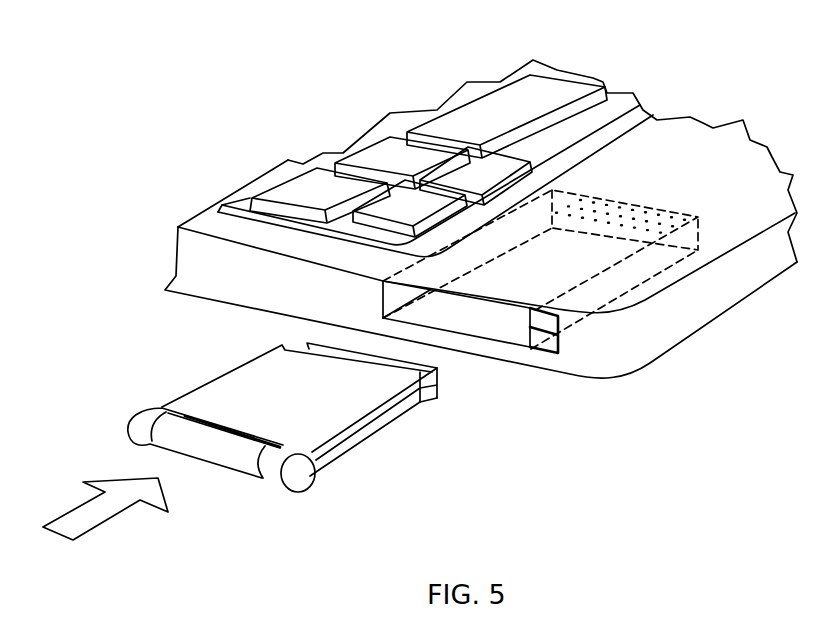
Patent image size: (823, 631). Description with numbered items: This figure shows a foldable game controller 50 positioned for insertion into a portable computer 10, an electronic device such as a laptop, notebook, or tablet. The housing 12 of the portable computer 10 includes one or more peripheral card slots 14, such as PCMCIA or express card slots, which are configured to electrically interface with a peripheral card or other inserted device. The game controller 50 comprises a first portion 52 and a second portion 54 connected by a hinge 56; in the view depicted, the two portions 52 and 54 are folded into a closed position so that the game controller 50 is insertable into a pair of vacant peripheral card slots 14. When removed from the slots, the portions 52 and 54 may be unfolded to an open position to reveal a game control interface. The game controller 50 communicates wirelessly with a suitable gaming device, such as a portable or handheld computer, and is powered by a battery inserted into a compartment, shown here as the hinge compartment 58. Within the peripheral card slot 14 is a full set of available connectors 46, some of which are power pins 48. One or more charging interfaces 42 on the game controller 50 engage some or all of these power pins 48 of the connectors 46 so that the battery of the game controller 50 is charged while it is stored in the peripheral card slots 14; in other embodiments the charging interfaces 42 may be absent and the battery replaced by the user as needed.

The portable computer 10 is at (698, 79).
The housing 12 is at (703, 322).
The peripheral card slot 14 is at (513, 348).
The charging interface 42 is at (305, 345).
The connectors 46 is at (680, 218).
The power pins 48 is at (584, 213).
The foldable game controller 50 is at (452, 408).
The first portion 52 is at (323, 450).
The second portion 54 is at (365, 435).
The hinge 56 is at (298, 476).
The hinge compartment 58 is at (177, 423).